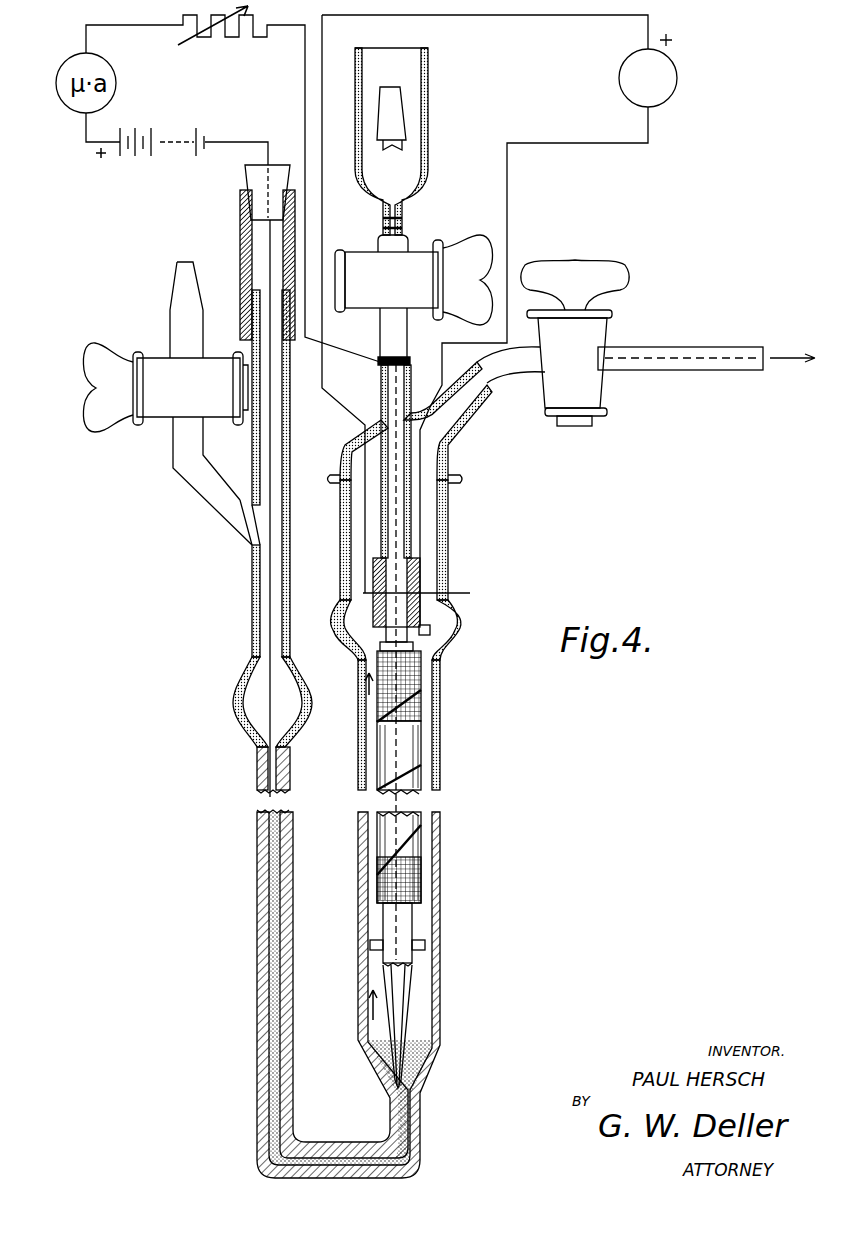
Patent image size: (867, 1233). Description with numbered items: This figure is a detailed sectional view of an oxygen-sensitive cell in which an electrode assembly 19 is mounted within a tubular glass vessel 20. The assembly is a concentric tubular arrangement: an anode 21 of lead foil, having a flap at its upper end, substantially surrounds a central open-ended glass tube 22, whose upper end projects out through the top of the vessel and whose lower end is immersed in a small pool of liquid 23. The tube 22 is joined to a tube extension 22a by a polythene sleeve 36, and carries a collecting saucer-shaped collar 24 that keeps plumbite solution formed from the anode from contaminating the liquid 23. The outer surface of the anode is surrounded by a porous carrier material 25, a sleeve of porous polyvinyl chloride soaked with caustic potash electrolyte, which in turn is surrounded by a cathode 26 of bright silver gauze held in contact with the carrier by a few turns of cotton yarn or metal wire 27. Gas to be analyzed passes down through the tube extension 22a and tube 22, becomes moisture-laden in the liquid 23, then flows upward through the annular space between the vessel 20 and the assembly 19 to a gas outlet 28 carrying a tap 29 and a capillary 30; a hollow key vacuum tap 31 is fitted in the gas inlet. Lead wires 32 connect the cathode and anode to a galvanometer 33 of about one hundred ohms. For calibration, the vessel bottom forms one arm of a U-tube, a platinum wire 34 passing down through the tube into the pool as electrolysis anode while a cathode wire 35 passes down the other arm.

The electrode assembly 19 is at (428, 779).
The tubular glass vessel 20 is at (441, 838).
The anode 21 is at (431, 630).
The glass tube 22 is at (418, 590).
The tube extension 22a is at (412, 516).
The pool of liquid 23 is at (437, 1062).
The collecting saucer-shaped collar 24 is at (425, 946).
The porous carrier material 25 is at (414, 648).
The cathode 26 is at (410, 752).
The cotton yarn or metal wire 27 is at (400, 693).
The gas outlet 28 is at (488, 392).
The tap 29 is at (598, 330).
The capillary 30 is at (748, 372).
The hollow key vacuum tap 31 is at (415, 258).
The lead wires 32 is at (325, 393).
The galvanometer 33 is at (679, 78).
The platinum wire 34 is at (400, 1003).
The cathode wire 35 is at (272, 706).
The polythene sleeve 36 is at (436, 596).